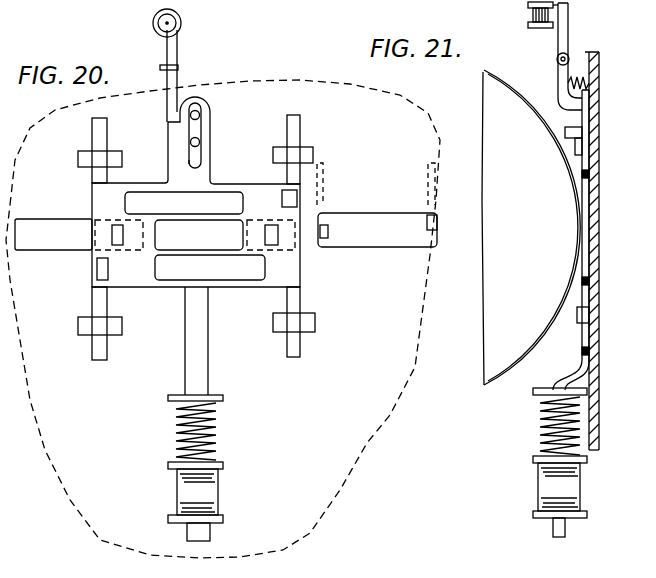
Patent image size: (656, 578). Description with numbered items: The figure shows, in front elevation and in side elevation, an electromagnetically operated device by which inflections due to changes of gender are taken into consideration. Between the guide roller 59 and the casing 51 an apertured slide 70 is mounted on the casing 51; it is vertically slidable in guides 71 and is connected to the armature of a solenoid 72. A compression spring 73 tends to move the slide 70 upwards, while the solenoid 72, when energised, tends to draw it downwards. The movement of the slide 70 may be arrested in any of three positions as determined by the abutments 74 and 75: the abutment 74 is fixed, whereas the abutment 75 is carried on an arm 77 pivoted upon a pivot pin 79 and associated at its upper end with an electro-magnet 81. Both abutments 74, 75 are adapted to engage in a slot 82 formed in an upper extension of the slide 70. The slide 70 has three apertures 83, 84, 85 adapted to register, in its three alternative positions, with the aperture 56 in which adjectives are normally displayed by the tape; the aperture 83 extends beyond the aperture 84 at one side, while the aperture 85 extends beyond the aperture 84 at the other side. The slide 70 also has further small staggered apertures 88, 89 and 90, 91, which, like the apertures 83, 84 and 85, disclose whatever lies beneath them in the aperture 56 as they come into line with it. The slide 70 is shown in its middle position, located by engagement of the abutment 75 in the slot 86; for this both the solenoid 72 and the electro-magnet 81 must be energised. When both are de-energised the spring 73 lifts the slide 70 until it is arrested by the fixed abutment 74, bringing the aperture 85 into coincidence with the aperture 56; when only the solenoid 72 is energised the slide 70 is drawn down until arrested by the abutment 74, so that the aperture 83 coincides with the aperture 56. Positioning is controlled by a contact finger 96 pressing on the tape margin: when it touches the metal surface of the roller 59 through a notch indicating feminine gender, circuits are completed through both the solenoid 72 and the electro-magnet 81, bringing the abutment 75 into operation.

In FIG. 20, the casing 51 is at (42, 422).
In FIG. 21, the casing 51 is at (599, 461).
In FIG. 20, the aperture 56 is at (62, 220).
In FIG. 21, the aperture 56 is at (598, 208).
In FIG. 21, the guide roller 59 is at (500, 325).
In FIG. 20, the apertured slide 70 is at (260, 289).
In FIG. 21, the apertured slide 70 is at (582, 266).
In FIG. 20, the guides 71 is at (83, 158).
In FIG. 21, the guides 71 is at (575, 147).
In FIG. 20, the solenoid 72 is at (220, 500).
In FIG. 21, the solenoid 72 is at (538, 495).
In FIG. 20, the compression spring 73 is at (222, 433).
In FIG. 21, the compression spring 73 is at (540, 437).
In FIG. 20, the fixed abutment 74 is at (200, 143).
In FIG. 21, the fixed abutment 74 is at (565, 133).
In FIG. 20, the movable abutment 75 is at (200, 115).
In FIG. 21, the movable abutment 75 is at (567, 89).
In FIG. 20, the arm 77 is at (166, 103).
In FIG. 20, the pivot pin 79 is at (160, 66).
In FIG. 21, the pivot pin 79 is at (570, 56).
In FIG. 20, the electro-magnet 81 is at (181, 30).
In FIG. 21, the electro-magnet 81 is at (546, 28).
In FIG. 20, the slot 82 is at (188, 135).
In FIG. 20, the aperture 83 is at (225, 202).
In FIG. 20, the aperture 84 is at (157, 250).
In FIG. 20, the aperture 85 is at (215, 278).
In FIG. 20, the slot 86 is at (193, 164).
In FIG. 20, the small aperture 88 is at (97, 268).
In FIG. 20, the small aperture 89 is at (112, 245).
In FIG. 20, the small aperture 90 is at (272, 246).
In FIG. 20, the small aperture 91 is at (297, 199).
In FIG. 20, the contact finger 96 is at (320, 206).